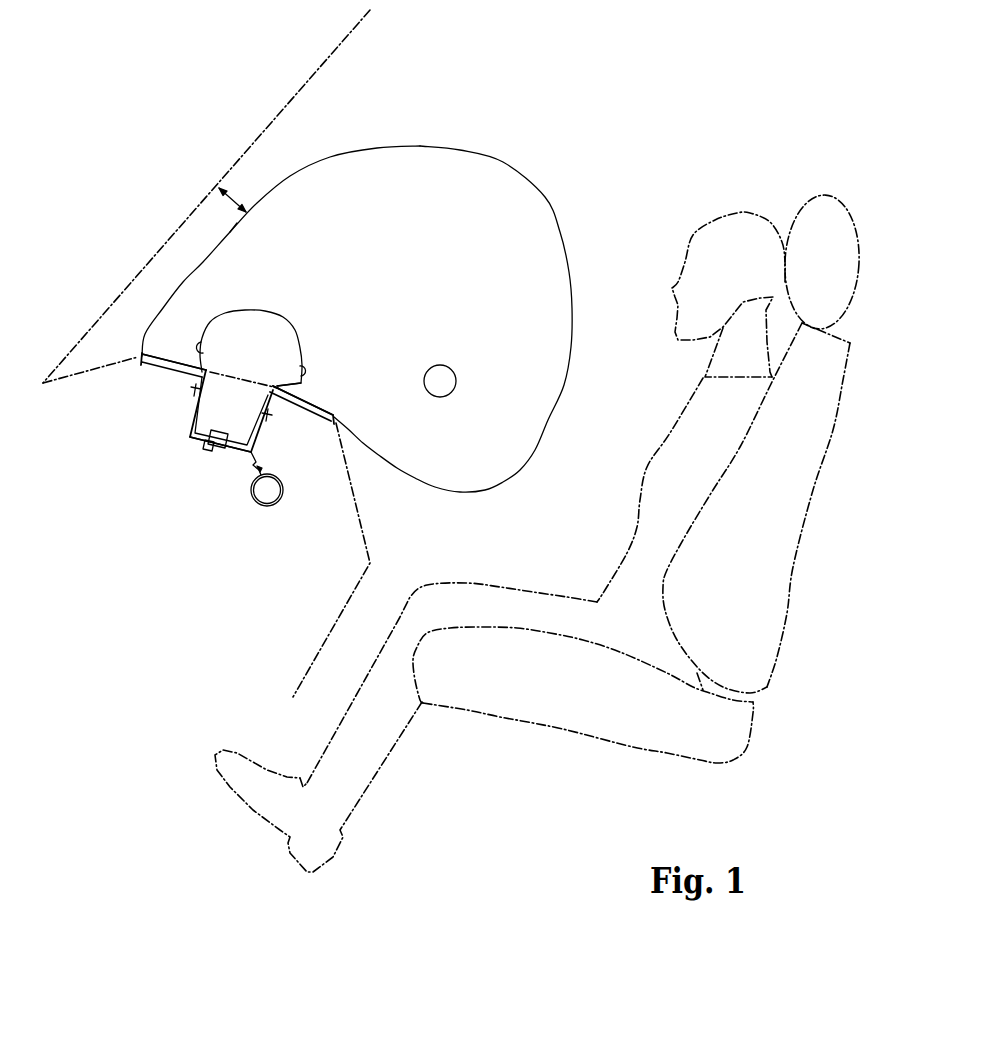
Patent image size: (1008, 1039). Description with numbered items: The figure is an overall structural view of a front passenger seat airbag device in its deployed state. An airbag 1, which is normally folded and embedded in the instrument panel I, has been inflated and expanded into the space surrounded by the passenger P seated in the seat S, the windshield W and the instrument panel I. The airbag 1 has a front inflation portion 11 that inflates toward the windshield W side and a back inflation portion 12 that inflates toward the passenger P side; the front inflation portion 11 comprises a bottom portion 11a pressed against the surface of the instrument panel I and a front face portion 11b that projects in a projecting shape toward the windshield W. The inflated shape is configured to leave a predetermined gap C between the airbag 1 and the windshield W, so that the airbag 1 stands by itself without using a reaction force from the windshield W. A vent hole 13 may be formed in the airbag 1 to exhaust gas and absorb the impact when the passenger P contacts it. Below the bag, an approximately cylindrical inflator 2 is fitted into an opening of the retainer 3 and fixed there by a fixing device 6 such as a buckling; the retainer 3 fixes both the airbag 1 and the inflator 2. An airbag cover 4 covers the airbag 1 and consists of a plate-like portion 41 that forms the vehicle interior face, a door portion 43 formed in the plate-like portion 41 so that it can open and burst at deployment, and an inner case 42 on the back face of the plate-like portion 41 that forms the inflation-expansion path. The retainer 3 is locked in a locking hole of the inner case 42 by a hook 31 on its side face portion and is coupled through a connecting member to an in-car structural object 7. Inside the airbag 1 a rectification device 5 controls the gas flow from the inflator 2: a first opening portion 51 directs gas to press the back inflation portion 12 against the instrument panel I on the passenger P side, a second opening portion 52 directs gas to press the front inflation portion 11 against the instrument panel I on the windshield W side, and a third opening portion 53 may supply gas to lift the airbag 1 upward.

The airbag 1 is at (380, 299).
The front inflation portion 11 is at (198, 253).
The bottom portion 11a is at (172, 357).
The front face portion 11b is at (237, 223).
The back inflation portion 12 is at (561, 203).
The vent hole 13 is at (440, 398).
The inflator 2 is at (218, 429).
The retainer 3 is at (189, 440).
The hook 31 is at (268, 417).
The airbag cover 4 is at (220, 401).
The plate-like portion 41 is at (315, 413).
The inner case 42 is at (192, 390).
The door portion 43 is at (176, 367).
The rectification device 5 is at (270, 332).
The first opening portion 51 is at (283, 387).
The second opening portion 52 is at (210, 350).
The third opening portion 53 is at (304, 370).
The fixing device 6 is at (217, 430).
The in-car structural object 7 is at (262, 507).
The windshield W is at (270, 128).
The instrument panel I is at (359, 512).
The gap C is at (233, 193).
The passenger P is at (742, 212).
The seat S is at (798, 562).